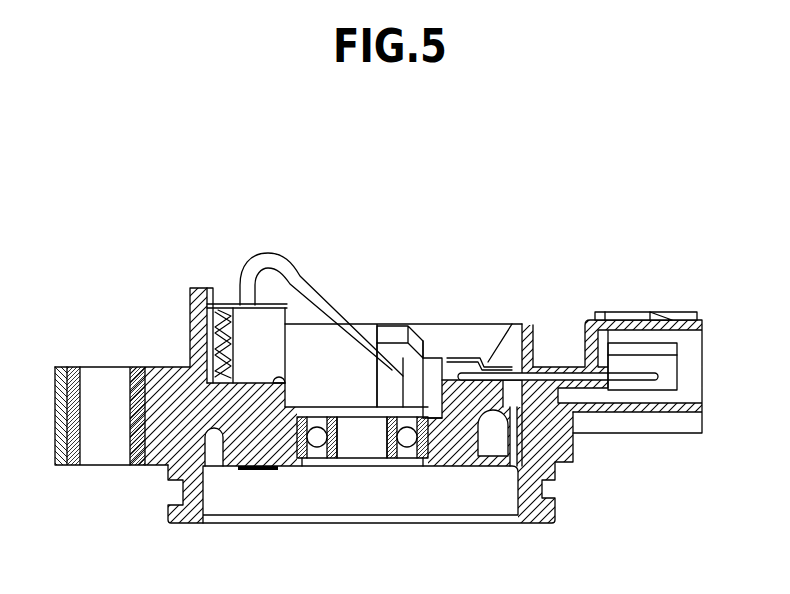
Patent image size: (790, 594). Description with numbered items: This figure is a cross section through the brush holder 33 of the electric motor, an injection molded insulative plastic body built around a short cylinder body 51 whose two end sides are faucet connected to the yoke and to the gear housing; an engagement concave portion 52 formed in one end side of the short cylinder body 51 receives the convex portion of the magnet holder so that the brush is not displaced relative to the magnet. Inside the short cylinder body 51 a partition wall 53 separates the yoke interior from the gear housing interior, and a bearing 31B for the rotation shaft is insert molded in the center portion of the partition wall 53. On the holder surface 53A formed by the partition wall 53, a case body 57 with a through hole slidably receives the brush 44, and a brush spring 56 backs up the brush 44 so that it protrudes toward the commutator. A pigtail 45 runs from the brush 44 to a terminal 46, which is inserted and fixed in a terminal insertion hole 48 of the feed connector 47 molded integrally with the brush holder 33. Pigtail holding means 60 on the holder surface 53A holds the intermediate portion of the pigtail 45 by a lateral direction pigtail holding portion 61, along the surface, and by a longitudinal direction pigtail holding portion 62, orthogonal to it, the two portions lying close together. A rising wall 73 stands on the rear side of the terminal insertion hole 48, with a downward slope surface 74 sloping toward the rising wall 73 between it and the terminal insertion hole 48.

The brush holder 33 is at (93, 348).
The short cylinder body 51 is at (190, 335).
The brush spring 56 is at (204, 308).
The case body 57 is at (238, 304).
The pigtail 45 is at (288, 252).
The brush 44 is at (270, 333).
The holder surface 53A is at (285, 379).
The longitudinal direction pigtail holding portion 62 is at (387, 338).
The pigtail holding means 60 is at (401, 313).
The rising wall 73 is at (442, 358).
The lateral direction pigtail holding portion 61 is at (465, 358).
The engagement concave portion 52 is at (525, 325).
The terminal insertion hole 48 is at (553, 374).
The feed connector 47 is at (683, 312).
The terminal 46 is at (652, 371).
The bearing 31B is at (407, 440).
The partition wall 53 is at (281, 455).
The downward slope surface 74 is at (472, 400).